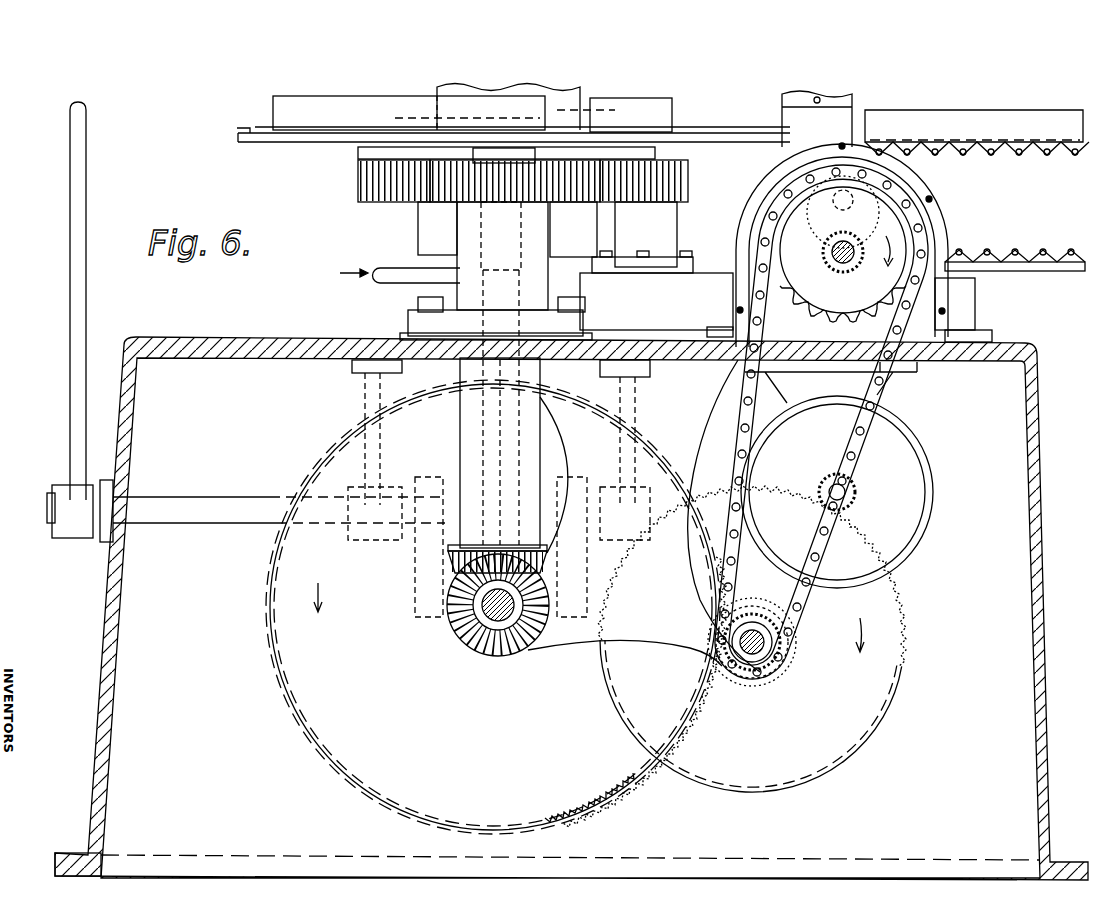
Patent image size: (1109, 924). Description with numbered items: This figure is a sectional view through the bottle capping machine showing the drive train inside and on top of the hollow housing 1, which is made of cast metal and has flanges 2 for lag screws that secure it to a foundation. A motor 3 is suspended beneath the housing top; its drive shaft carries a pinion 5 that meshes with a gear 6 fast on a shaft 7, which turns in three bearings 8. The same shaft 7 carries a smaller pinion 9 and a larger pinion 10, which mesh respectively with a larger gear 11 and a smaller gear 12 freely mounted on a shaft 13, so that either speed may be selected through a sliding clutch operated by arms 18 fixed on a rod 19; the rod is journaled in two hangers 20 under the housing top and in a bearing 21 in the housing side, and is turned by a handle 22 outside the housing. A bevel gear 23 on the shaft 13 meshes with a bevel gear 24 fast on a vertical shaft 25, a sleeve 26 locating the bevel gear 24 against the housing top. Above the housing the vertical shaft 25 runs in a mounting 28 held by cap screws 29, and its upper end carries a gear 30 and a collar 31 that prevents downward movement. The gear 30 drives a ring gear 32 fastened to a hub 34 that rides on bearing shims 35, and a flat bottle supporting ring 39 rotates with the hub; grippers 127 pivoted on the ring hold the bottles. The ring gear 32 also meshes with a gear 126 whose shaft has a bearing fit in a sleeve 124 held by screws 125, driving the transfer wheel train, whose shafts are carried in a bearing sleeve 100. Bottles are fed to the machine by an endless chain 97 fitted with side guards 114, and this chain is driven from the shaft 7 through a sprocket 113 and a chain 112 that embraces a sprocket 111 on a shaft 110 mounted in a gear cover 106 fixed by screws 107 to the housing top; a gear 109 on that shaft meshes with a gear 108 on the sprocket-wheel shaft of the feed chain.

The housing 1 is at (105, 632).
The flanges 2 is at (62, 860).
The motor 3 is at (920, 512).
The pinion 5 is at (856, 492).
The gear 6 is at (898, 603).
The shaft 7 is at (760, 643).
The bearings 8 is at (660, 641).
The pinion 9 is at (742, 662).
The pinion 10 is at (742, 602).
The gear 11 is at (620, 790).
The gear 12 is at (622, 780).
The shaft 13 is at (480, 615).
The arms 18 is at (415, 575).
The rod 19 is at (215, 497).
The hangers 20 is at (352, 387).
The bearing 21 is at (106, 482).
The handle 22 is at (70, 355).
The bevel gear 23 is at (488, 645).
The gear 24 is at (450, 551).
The vertical shaft 25 is at (483, 461).
The sleeve 26 is at (460, 440).
The mounting 28 is at (548, 285).
The cap screws 29 is at (420, 303).
The gear 30 is at (440, 202).
The collar 31 is at (504, 156).
The ring gear 32 is at (365, 200).
The hub 34 is at (362, 150).
The bearing shims 35 is at (440, 210).
The bottle supporting ring 39 is at (245, 140).
The endless chain 97 is at (1024, 152).
The bearing sleeve 100 is at (817, 119).
The gear cover 106 is at (775, 158).
The screws 107 is at (716, 328).
The gear 108 is at (878, 215).
The gear 109 is at (835, 262).
The shaft 110 is at (832, 248).
The sprocket 111 is at (805, 310).
The chain 112 is at (885, 388).
The sprocket 113 is at (766, 618).
The side guards 114 is at (974, 126).
The sleeve 124 is at (677, 224).
The screws 125 is at (665, 258).
The gear 126 is at (688, 185).
The grippers 127 is at (472, 108).